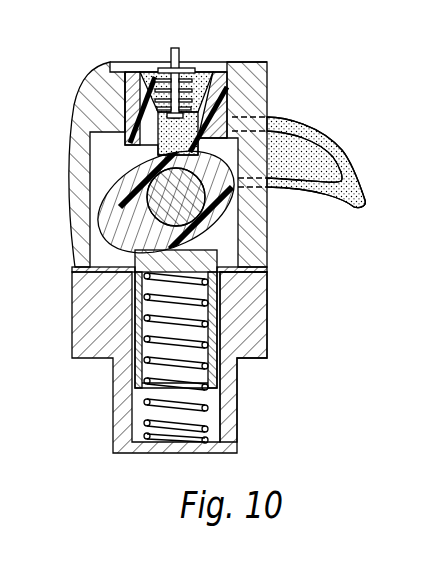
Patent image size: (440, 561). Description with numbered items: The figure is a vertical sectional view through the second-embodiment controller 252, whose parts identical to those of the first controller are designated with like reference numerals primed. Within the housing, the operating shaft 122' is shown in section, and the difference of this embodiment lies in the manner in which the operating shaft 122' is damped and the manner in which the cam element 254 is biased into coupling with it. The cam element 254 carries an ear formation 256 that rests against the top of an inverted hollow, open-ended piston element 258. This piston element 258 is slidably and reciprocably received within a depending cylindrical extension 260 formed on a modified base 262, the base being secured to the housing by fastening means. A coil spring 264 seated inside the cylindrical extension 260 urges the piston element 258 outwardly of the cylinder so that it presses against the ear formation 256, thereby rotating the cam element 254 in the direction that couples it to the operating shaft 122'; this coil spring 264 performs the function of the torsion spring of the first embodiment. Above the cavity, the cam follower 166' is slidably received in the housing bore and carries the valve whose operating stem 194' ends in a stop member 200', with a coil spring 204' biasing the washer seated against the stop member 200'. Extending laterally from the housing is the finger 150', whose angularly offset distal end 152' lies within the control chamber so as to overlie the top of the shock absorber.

The operating shaft 122' is at (194, 207).
The finger 150' is at (316, 152).
The angularly offset distal end 152' is at (340, 218).
The cam follower 166' is at (201, 91).
The operating stem 194' is at (191, 67).
The stop member 200' is at (166, 202).
The coil spring 204' is at (168, 84).
The controller 252 is at (113, 61).
The cam element 254 is at (86, 186).
The ear formation 256 is at (130, 205).
The piston element 258 is at (214, 260).
The cylindrical extension 260 is at (247, 339).
The modified base 262 is at (87, 337).
The coil spring 264 is at (190, 406).